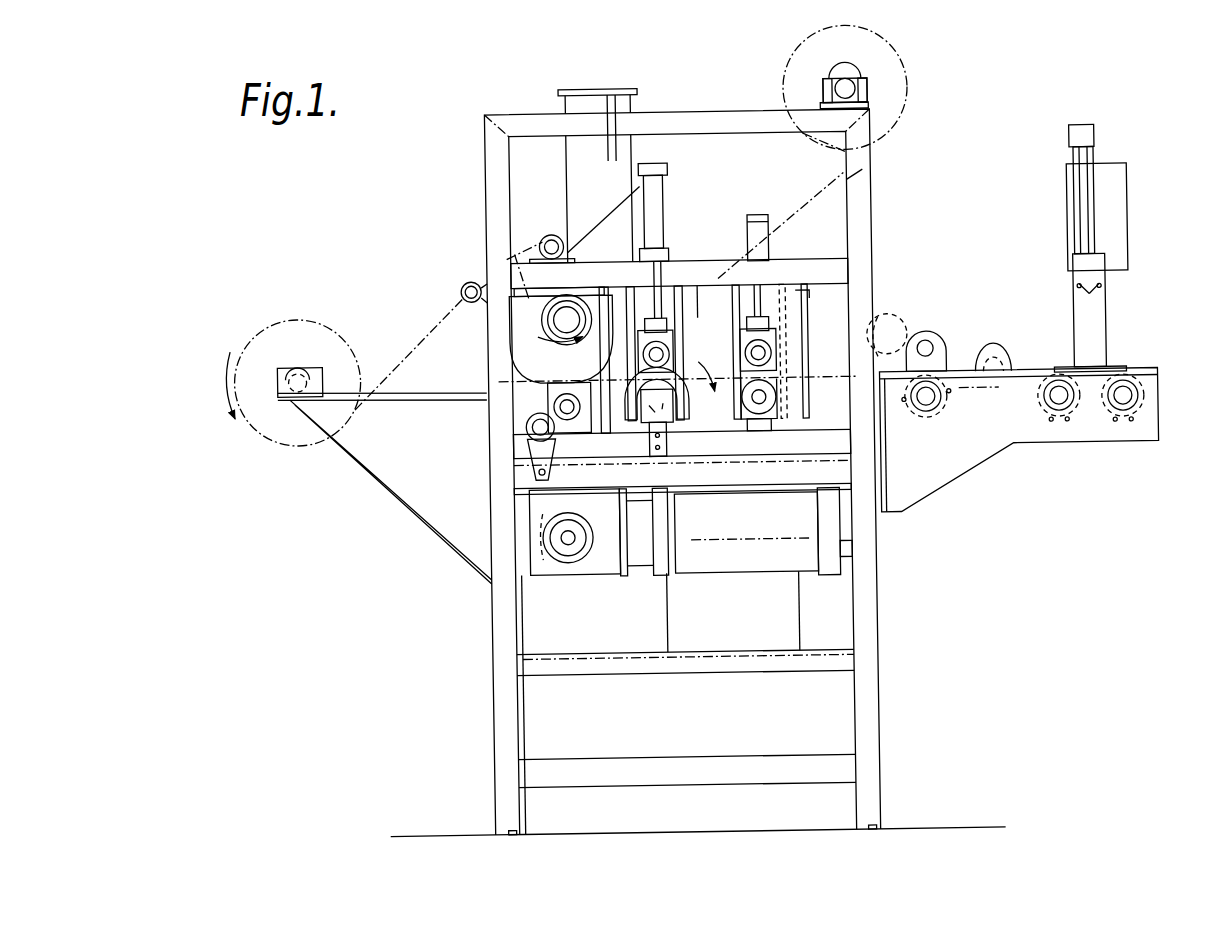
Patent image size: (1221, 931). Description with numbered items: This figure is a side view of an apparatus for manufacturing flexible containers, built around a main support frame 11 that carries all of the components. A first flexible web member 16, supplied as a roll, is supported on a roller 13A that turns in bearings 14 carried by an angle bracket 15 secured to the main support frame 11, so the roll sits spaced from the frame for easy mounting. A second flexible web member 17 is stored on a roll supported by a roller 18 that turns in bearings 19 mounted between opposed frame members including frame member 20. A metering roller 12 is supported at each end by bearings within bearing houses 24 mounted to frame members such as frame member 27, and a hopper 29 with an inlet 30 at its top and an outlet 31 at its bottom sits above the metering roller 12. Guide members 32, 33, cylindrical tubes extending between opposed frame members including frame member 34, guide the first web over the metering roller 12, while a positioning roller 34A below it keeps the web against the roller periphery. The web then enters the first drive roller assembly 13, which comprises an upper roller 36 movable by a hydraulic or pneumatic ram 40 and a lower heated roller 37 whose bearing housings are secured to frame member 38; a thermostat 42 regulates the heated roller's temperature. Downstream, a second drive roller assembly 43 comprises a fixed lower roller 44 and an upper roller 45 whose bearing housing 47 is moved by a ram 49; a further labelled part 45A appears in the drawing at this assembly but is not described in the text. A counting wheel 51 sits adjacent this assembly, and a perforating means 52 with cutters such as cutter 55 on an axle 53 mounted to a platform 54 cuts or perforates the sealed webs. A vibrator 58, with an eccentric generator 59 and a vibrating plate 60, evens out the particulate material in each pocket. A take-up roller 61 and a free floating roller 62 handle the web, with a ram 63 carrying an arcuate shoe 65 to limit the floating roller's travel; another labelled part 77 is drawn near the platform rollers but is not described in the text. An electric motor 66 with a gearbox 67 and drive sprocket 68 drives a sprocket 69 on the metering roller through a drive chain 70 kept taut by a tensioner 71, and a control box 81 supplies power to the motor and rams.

The main support frame 11 is at (518, 86).
The metering roller 12 is at (520, 342).
The first drive roller assembly 13 is at (707, 385).
The roller 13A is at (302, 364).
The bearings 14 is at (292, 389).
The angle bracket 15 is at (378, 488).
The first flexible web member 16 is at (443, 291).
The second flexible web member 17 is at (854, 193).
The roller 18 is at (886, 73).
The bearings 19 is at (831, 86).
The frame member 20 is at (867, 172).
The bearing house 24 is at (518, 252).
The frame member 27 is at (714, 268).
The hopper 29 is at (636, 104).
The inlet 30 is at (603, 81).
The outlet 31 is at (594, 236).
The guide member 32 is at (472, 279).
The guide member 33 is at (554, 235).
The frame member 34 is at (499, 169).
The positioning roller 34A is at (549, 392).
The upper roller 36 is at (672, 335).
The heated roller 37 is at (671, 425).
The frame member 38 is at (713, 440).
The hydraulic or pneumatic ram 40 is at (665, 192).
The thermostat 42 is at (652, 427).
The second drive roller assembly 43 is at (792, 347).
The lower roller 44 is at (792, 395).
The upper roller 45 is at (787, 357).
The roller support 45A is at (767, 416).
The bearing housing 47 is at (848, 296).
The hydraulic or pneumatic ram 49 is at (761, 216).
The counting wheel 51 is at (891, 318).
The perforating means 52 is at (947, 330).
The axle 53 is at (932, 350).
The platform 54 is at (939, 445).
The cutter 55 is at (907, 329).
The vibrator 58 is at (1020, 356).
The eccentric generator 59 is at (1003, 350).
The vibrating plate 60 is at (998, 398).
The take-up roller 61 is at (1154, 401).
The free floating roller 62 is at (1108, 347).
The hydraulic or pneumatic ram 63 is at (1088, 189).
The arcuate shoe 65 is at (1104, 292).
The electric motor 66 is at (754, 549).
The gearbox 67 is at (543, 568).
The drive sprocket 68 is at (581, 553).
The sprocket 69 is at (518, 327).
The drive chain 70 is at (502, 507).
The tensioner 71 is at (527, 437).
The roller 77 is at (1078, 441).
The control box 81 is at (1130, 217).